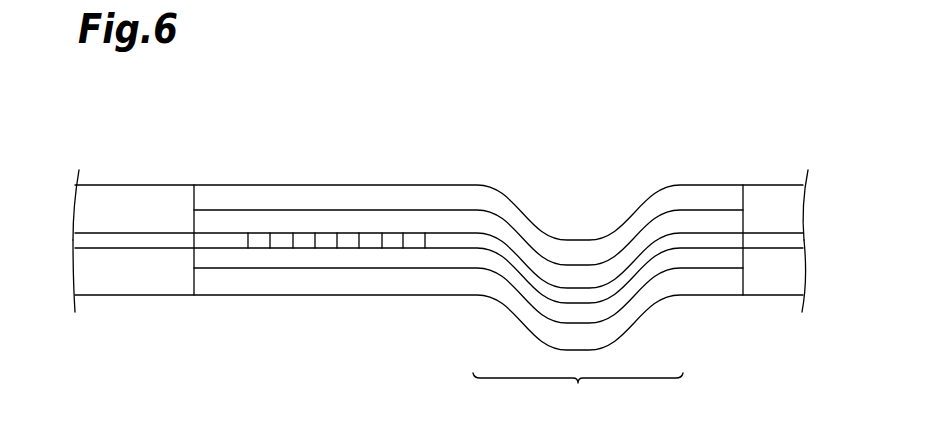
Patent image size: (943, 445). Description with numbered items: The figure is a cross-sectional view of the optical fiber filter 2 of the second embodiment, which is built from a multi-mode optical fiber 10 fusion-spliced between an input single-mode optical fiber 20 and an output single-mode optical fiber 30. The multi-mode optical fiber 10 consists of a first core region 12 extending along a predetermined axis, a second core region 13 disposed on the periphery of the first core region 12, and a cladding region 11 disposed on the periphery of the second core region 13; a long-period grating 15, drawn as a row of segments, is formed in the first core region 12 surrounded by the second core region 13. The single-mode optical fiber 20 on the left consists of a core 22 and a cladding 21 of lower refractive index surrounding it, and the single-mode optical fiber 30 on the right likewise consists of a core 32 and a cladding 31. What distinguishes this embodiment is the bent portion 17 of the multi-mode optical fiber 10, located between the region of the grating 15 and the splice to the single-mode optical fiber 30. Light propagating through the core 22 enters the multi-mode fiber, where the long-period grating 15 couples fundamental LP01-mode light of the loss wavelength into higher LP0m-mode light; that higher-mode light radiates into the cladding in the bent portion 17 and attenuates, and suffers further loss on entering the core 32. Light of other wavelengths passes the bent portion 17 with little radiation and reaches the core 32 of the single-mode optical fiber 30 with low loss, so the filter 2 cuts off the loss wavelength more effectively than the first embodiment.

The optical fiber filter 2 is at (588, 185).
The multi-mode optical fiber 10 is at (399, 185).
The cladding region 11 is at (318, 193).
The first core region 12 is at (220, 243).
The second core region 13 is at (228, 220).
The long-period grating 15 is at (388, 242).
The bent portion 17 is at (578, 395).
The single-mode optical fiber 20 is at (168, 184).
The cladding 21 is at (123, 192).
The core 22 is at (123, 288).
The single-mode optical fiber 30 is at (792, 180).
The cladding 31 is at (765, 192).
The core 32 is at (765, 287).